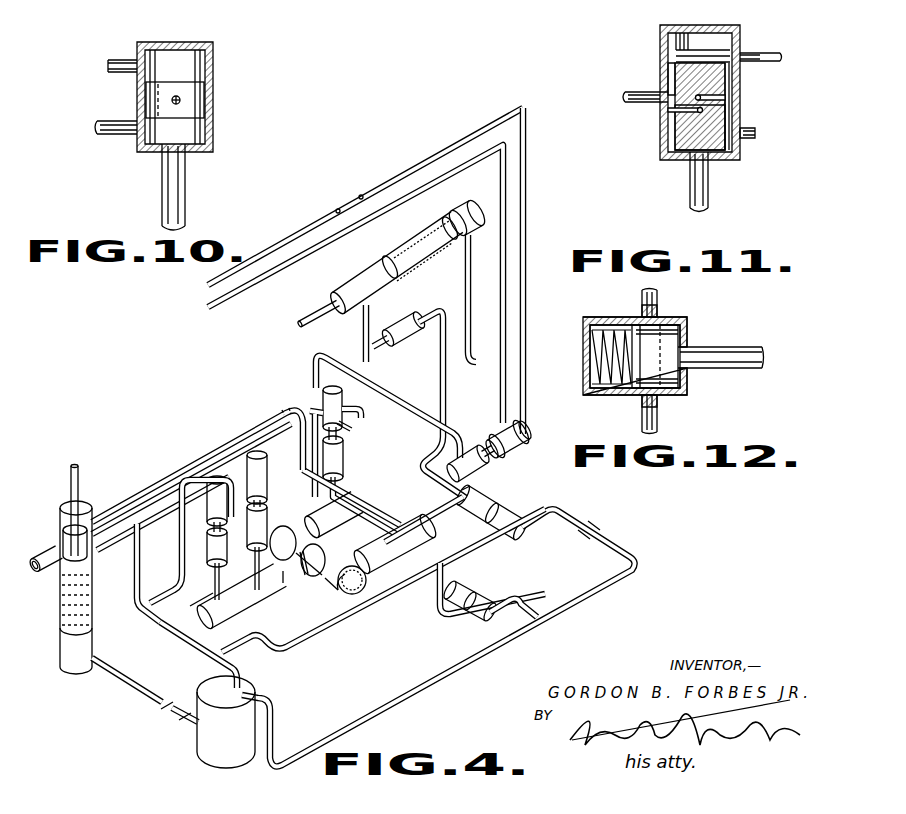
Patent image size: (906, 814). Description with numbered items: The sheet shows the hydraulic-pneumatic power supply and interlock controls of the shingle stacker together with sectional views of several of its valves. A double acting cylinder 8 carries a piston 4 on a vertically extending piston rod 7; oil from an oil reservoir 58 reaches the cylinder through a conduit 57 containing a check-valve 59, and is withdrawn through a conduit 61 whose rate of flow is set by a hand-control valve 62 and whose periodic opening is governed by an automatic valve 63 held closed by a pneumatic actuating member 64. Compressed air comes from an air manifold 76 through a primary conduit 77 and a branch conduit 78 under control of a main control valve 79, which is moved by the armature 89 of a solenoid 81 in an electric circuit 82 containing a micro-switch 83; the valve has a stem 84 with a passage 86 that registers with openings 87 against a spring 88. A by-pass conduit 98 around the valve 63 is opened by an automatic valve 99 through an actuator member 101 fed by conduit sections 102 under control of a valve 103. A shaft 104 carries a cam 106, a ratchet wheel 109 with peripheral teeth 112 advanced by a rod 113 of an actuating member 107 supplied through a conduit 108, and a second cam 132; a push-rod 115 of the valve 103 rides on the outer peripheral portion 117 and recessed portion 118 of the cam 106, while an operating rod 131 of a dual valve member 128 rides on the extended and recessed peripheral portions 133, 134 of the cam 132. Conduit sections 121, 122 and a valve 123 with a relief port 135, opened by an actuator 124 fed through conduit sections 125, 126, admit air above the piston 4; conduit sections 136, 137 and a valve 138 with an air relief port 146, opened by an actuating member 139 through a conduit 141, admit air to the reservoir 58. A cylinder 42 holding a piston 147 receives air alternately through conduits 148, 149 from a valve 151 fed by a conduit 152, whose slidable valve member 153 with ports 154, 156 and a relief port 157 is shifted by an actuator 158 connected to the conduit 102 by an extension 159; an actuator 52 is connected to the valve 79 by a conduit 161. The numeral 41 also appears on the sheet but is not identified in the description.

In FIG. 4, the piston 4 is at (63, 540).
In FIG. 4, the piston rod 7 is at (80, 480).
In FIG. 4, the double acting cylinder 8 is at (60, 660).
In FIG. 4, the piston rod 41 is at (302, 318).
In FIG. 4, the cylinder 42 is at (352, 290).
In FIG. 4, the actuator 52 is at (411, 318).
In FIG. 4, the conduit 57 is at (120, 684).
In FIG. 4, the oil reservoir 58 is at (206, 742).
In FIG. 4, the check-valve 59 is at (165, 712).
In FIG. 4, the conduit 61 is at (560, 510).
In FIG. 4, the hand-control valve 62 is at (604, 522).
In FIG. 4, the automatic valve 63 is at (508, 516).
In FIG. 4, the pneumatic actuating member 64 is at (490, 504).
In FIG. 4, the air manifold 76 is at (38, 574).
In FIG. 12, the primary conduit 77 is at (658, 300).
In FIG. 4, the primary conduit 77 is at (400, 410).
In FIG. 4, the branch conduit 78 is at (470, 494).
In FIG. 12, the main control valve 79 is at (704, 372).
In FIG. 4, the main control valve 79 is at (472, 447).
In FIG. 4, the solenoid 81 is at (528, 428).
In FIG. 4, the electric circuit 82 is at (526, 345).
In FIG. 4, the micro-switch 83 is at (361, 196).
In FIG. 12, the stem 84 is at (742, 350).
In FIG. 12, the passage 86 is at (690, 334).
In FIG. 12, the openings 87 is at (658, 312).
In FIG. 12, the spring 88 is at (626, 330).
In FIG. 4, the armature 89 is at (502, 456).
In FIG. 4, the conduit 98 is at (436, 614).
In FIG. 4, the automatic valve 99 is at (490, 600).
In FIG. 4, the air-operated actuator member 101 is at (460, 582).
In FIG. 4, the conduit sections 102 is at (312, 488).
In FIG. 4, the valve 103 is at (366, 500).
In FIG. 4, the shaft 104 is at (332, 590).
In FIG. 4, the cam 106 is at (284, 543).
In FIG. 4, the air-operated actuating member 107 is at (412, 512).
In FIG. 4, the conduit 108 is at (452, 508).
In FIG. 4, the ratchet wheel 109 is at (352, 598).
In FIG. 4, the peripheral teeth 112 is at (366, 585).
In FIG. 4, the rod 113 is at (370, 535).
In FIG. 4, the push-rod 115 is at (322, 534).
In FIG. 4, the outer peripheral portion 117 is at (252, 505).
In FIG. 4, the recessed portion 118 is at (220, 540).
In FIG. 10, the conduit section 121 is at (182, 98).
In FIG. 4, the conduit section 121 is at (243, 452).
In FIG. 10, the conduit section 122 is at (97, 121).
In FIG. 4, the conduit section 122 is at (214, 448).
In FIG. 10, the valve 123 is at (215, 41).
In FIG. 4, the valve 123 is at (287, 407).
In FIG. 4, the air-operated actuator 124 is at (246, 530).
In FIG. 4, the conduit section 125 is at (183, 584).
In FIG. 4, the conduit section 126 is at (255, 572).
In FIG. 4, the dual valve member 128 is at (236, 614).
In FIG. 4, the operating rod 131 is at (280, 585).
In FIG. 4, the cam 132 is at (315, 560).
In FIG. 4, the extended peripheral portion 133 is at (315, 572).
In FIG. 4, the recessed peripheral portion 134 is at (296, 575).
In FIG. 10, the relief port 135 is at (110, 58).
In FIG. 4, the relief port 135 is at (260, 453).
In FIG. 4, the conduit section 136 is at (180, 492).
In FIG. 4, the conduit section 137 is at (182, 634).
In FIG. 4, the valve 138 is at (214, 478).
In FIG. 4, the air-operated actuating member 139 is at (205, 550).
In FIG. 4, the conduit 141 is at (198, 603).
In FIG. 4, the air relief port 146 is at (214, 500).
In FIG. 4, the piston 147 is at (461, 218).
In FIG. 11, the conduit 148 is at (764, 52).
In FIG. 4, the conduit 148 is at (366, 325).
In FIG. 11, the conduit 149 is at (700, 97).
In FIG. 4, the conduit 149 is at (471, 300).
In FIG. 11, the valve 151 is at (658, 34).
In FIG. 4, the valve 151 is at (330, 385).
In FIG. 11, the conduit 152 is at (625, 97).
In FIG. 4, the conduit 152 is at (311, 408).
In FIG. 11, the slidable valve member 153 is at (690, 125).
In FIG. 11, the port 154 is at (672, 75).
In FIG. 11, the port 156 is at (668, 110).
In FIG. 11, the relief port 157 is at (756, 132).
In FIG. 4, the relief port 157 is at (362, 411).
In FIG. 4, the actuator 158 is at (350, 431).
In FIG. 4, the extension 159 is at (345, 470).
In FIG. 4, the conduit 161 is at (446, 400).